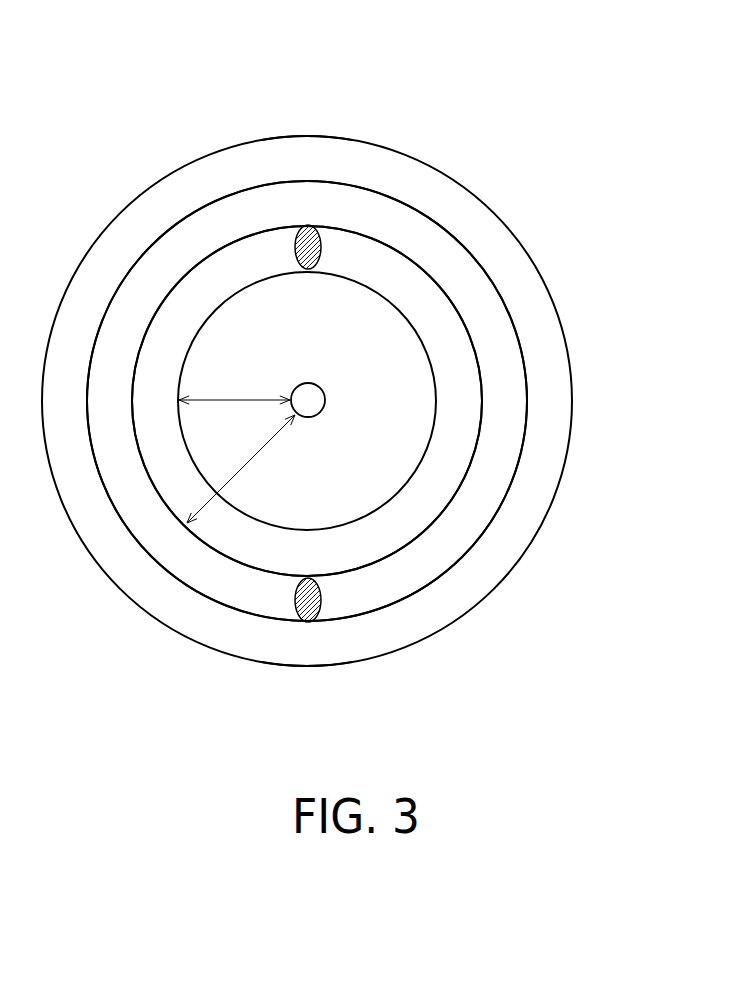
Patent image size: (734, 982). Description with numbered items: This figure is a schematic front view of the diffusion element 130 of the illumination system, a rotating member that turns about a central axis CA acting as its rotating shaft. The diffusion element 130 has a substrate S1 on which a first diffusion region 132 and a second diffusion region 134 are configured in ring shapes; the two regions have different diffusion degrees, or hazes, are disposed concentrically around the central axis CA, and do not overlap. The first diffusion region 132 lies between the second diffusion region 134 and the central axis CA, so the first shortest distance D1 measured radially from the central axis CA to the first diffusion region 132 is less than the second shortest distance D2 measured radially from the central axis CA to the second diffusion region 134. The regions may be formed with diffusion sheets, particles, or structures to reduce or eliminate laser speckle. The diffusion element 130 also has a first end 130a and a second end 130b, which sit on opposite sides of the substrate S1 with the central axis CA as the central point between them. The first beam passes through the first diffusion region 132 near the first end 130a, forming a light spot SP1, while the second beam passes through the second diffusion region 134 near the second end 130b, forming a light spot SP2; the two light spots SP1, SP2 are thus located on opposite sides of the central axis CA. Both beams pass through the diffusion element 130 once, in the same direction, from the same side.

The diffusion element 130 is at (636, 125).
The first end 130a is at (307, 130).
The second end 130b is at (305, 677).
The substrate S1 is at (398, 177).
The first diffusion region 132 is at (438, 308).
The second diffusion region 134 is at (497, 328).
The light spot SP1 is at (293, 257).
The light spot SP2 is at (287, 600).
The central axis CA is at (312, 395).
The first shortest distance D1 is at (234, 387).
The second shortest distance D2 is at (241, 469).